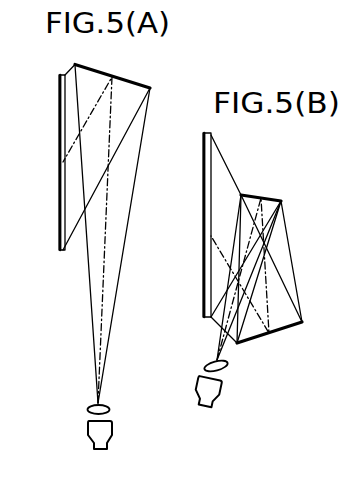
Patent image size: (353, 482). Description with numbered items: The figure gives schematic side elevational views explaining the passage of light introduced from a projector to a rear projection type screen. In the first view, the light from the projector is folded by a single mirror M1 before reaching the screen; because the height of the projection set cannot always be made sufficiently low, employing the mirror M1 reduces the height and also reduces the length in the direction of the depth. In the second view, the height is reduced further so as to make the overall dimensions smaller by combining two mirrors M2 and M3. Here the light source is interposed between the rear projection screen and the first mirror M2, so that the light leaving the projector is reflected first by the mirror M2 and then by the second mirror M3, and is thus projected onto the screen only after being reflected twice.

The mirror M1 is at (138, 82).
The first mirror M2 is at (276, 194).
The second mirror M3 is at (281, 331).